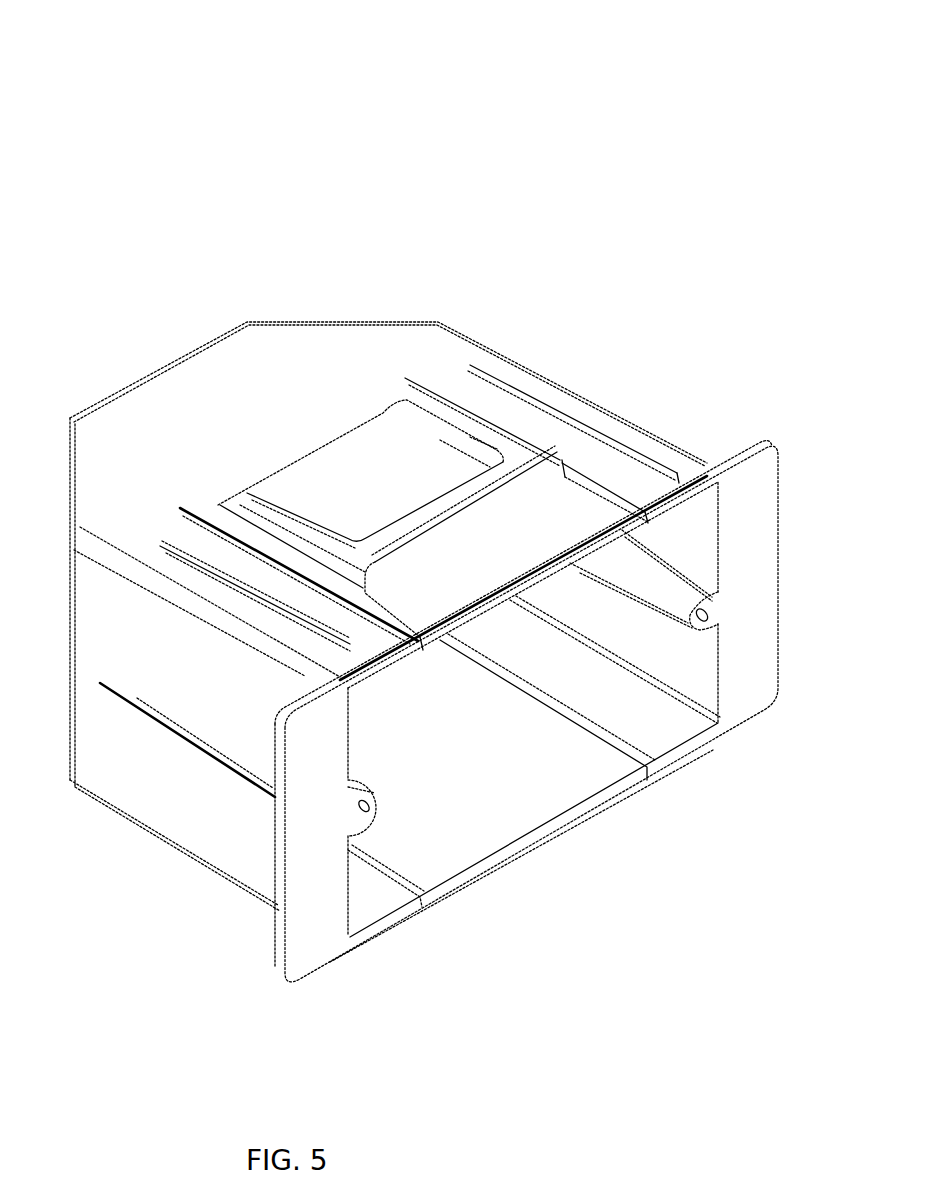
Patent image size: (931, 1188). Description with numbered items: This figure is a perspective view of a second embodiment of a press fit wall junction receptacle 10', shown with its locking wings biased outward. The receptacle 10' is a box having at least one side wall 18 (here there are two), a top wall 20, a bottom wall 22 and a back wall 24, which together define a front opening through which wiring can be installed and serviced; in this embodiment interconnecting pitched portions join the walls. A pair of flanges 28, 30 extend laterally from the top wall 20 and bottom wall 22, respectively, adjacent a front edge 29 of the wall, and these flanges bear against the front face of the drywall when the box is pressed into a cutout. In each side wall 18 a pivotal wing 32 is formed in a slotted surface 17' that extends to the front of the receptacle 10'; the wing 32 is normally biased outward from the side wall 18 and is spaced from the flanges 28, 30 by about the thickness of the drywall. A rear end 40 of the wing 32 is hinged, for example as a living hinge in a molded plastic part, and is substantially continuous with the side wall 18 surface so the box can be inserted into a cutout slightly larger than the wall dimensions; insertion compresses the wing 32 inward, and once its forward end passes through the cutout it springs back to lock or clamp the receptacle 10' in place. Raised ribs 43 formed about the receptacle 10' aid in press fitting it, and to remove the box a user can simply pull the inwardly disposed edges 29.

The junction receptacle 10' is at (95, 64).
The slotted surface 17' is at (526, 760).
The side wall 18 is at (447, 350).
The top wall 20 is at (613, 405).
The bottom wall 22 is at (244, 709).
The back wall 24 is at (146, 368).
The flange 28 is at (730, 577).
The front edge 29 is at (543, 833).
The flange 30 is at (340, 808).
The pivotal wing 32 is at (477, 463).
The rear end of wing 40 is at (387, 400).
The raised rib 43 is at (660, 457).